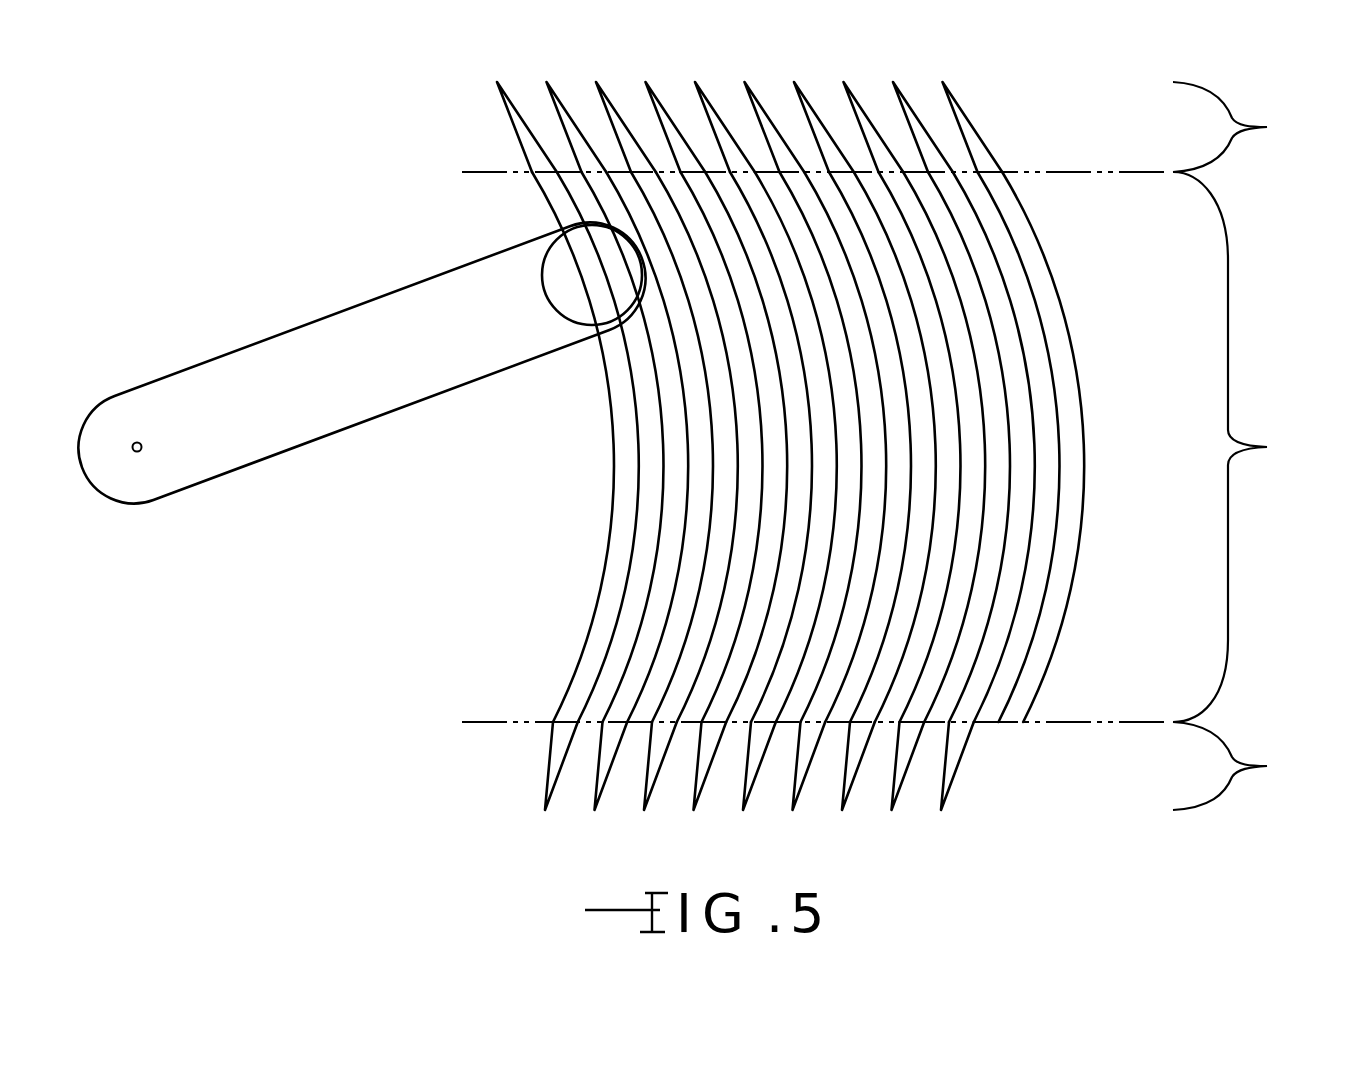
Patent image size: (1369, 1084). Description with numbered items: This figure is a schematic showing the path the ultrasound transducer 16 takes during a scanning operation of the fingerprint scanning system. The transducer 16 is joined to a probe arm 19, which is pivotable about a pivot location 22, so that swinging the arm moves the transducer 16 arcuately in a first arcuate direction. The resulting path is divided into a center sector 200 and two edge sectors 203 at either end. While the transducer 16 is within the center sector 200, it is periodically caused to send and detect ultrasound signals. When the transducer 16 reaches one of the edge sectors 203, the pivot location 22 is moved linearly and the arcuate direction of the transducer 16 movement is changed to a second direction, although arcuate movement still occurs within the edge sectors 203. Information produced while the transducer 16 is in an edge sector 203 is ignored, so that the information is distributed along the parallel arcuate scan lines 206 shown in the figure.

The ultrasound transducer 16 is at (542, 280).
The probe arm 19 is at (420, 402).
The pivot location 22 is at (135, 444).
The center sector 200 is at (908, 447).
The edge sectors 203 is at (1258, 446).
The parallel arcuate scan lines 206 is at (613, 498).